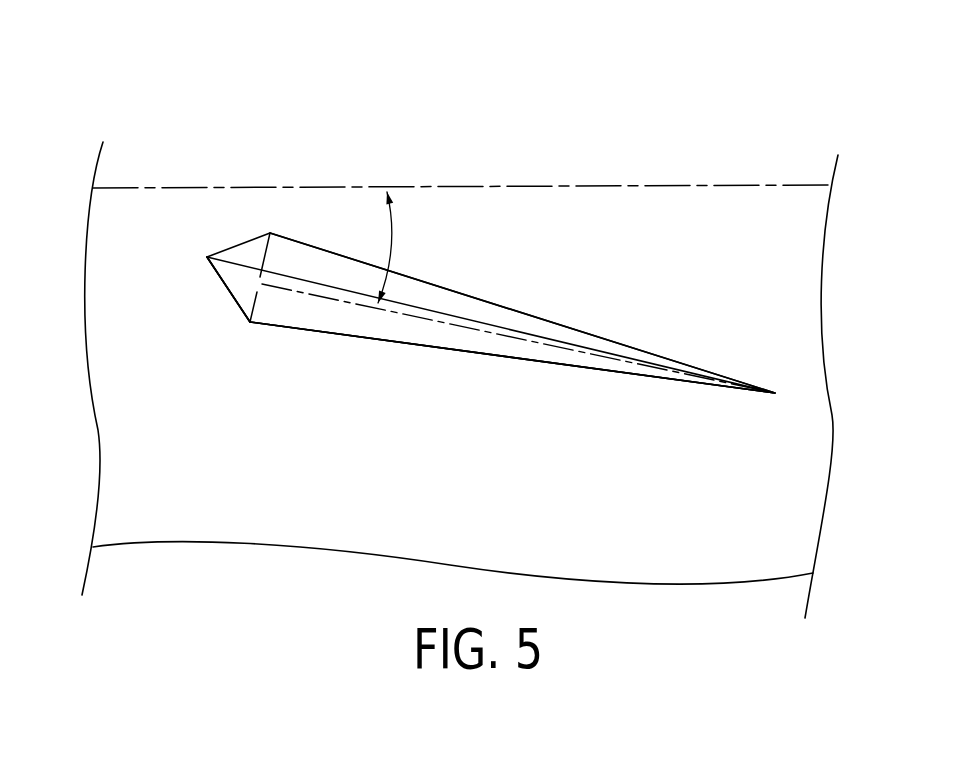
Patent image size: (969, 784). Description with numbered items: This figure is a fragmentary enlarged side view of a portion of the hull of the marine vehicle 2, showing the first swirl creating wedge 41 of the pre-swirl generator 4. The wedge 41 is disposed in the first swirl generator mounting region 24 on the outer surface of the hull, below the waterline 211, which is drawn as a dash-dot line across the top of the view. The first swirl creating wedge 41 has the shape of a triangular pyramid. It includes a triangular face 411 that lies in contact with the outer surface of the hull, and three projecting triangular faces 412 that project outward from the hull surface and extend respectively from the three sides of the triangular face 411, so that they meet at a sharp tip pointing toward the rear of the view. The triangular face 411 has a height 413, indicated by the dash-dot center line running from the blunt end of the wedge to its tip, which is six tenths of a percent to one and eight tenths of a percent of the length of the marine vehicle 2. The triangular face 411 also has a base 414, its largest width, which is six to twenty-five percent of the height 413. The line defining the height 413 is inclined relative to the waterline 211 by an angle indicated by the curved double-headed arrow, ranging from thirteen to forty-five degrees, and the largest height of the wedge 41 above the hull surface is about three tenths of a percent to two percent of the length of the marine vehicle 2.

The marine vehicle 2 is at (208, 132).
The waterline 211 is at (636, 185).
The first swirl generator mounting region 24 is at (347, 203).
The pre-swirl generator 4 is at (398, 500).
The first swirl creating wedge 41 is at (385, 353).
The triangular face 411 is at (303, 318).
The projecting triangular faces 412 is at (233, 250).
The height 413 is at (523, 340).
The base 414 is at (257, 292).